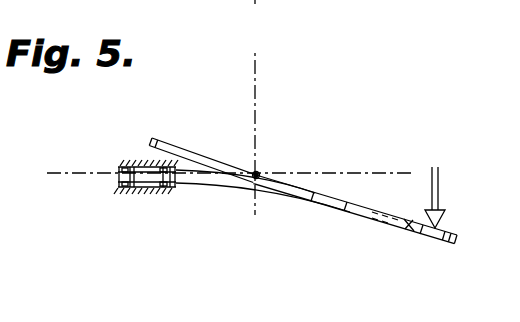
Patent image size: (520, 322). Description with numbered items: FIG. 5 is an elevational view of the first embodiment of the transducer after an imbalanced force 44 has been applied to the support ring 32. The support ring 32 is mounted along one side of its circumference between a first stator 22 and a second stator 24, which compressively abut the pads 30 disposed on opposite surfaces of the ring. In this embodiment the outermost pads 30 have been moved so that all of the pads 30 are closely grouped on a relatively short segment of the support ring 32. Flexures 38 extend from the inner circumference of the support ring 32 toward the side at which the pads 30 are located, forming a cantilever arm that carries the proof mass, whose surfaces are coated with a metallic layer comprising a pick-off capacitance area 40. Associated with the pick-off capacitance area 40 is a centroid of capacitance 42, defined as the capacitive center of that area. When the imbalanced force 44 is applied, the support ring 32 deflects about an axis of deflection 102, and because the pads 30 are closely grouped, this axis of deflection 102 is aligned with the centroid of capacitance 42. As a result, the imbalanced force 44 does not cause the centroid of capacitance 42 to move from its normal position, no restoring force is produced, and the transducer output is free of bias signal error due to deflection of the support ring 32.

The first stator 22 is at (120, 193).
The second stator 24 is at (124, 160).
The pads 30 is at (120, 169).
The support ring 32 is at (253, 191).
The flexures 38 is at (387, 230).
The pick-off capacitance area 40 is at (185, 151).
The centroid of capacitance 42 is at (260, 170).
The imbalanced force 44 is at (437, 192).
The axis of deflection 102 is at (263, 173).